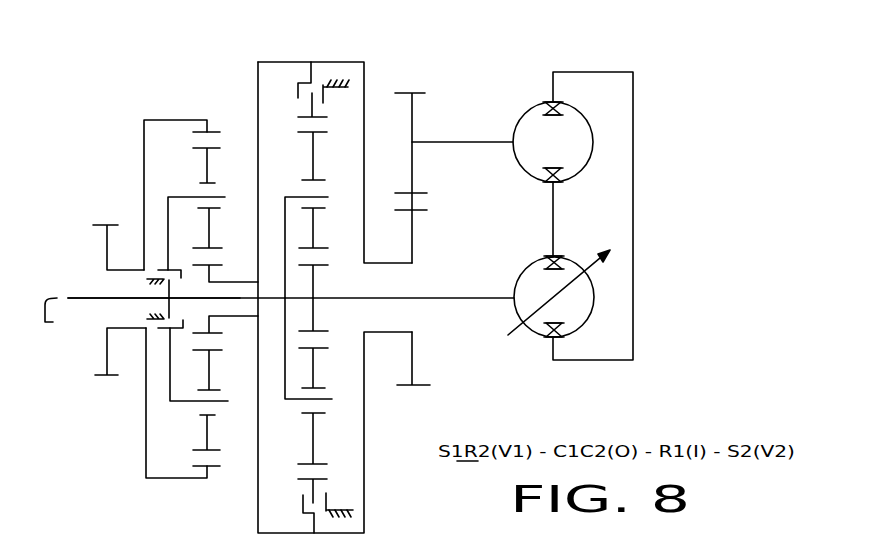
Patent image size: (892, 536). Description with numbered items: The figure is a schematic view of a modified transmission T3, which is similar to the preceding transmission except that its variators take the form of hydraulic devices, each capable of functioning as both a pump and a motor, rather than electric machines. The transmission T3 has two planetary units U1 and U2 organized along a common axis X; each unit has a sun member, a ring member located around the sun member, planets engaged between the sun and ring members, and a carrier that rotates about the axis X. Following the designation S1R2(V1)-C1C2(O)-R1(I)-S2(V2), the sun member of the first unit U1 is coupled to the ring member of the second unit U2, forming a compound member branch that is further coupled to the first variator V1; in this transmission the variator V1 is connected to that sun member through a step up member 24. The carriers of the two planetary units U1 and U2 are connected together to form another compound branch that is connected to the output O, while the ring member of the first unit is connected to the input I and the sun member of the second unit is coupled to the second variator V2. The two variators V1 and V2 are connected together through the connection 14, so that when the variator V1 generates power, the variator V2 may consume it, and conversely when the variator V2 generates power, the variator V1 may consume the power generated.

The modified transmission T3 is at (179, 95).
The first planetary unit U1 is at (176, 491).
The second planetary unit U2 is at (246, 91).
The step up member 24 is at (412, 130).
The first variator V1 is at (530, 94).
The second variator V2 is at (518, 341).
The conductor 14 is at (633, 203).
The input I is at (100, 222).
The output O is at (95, 298).
The common axis X is at (279, 315).